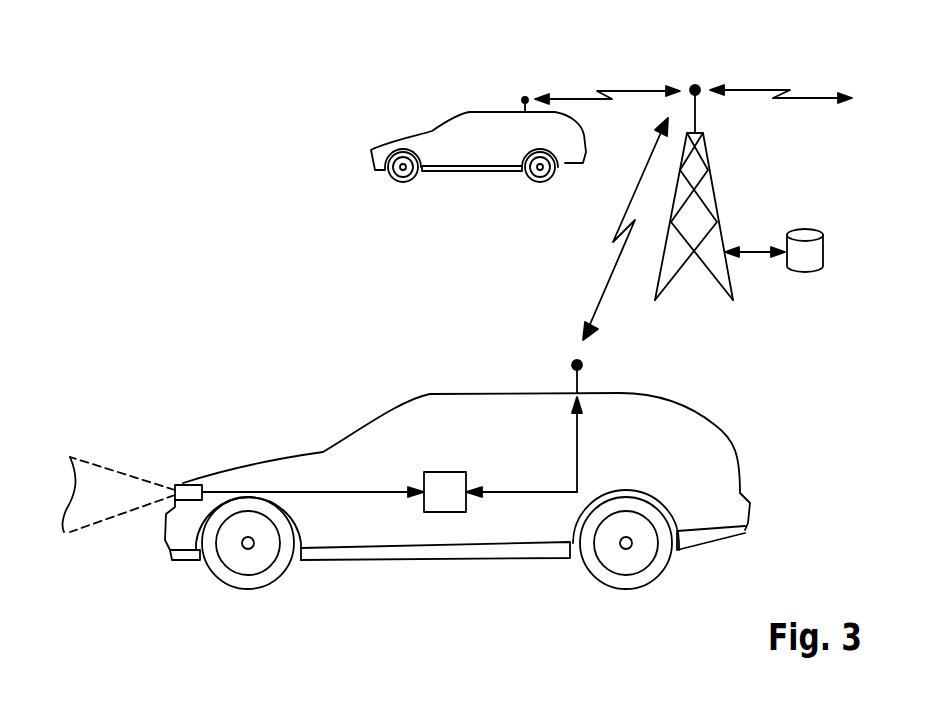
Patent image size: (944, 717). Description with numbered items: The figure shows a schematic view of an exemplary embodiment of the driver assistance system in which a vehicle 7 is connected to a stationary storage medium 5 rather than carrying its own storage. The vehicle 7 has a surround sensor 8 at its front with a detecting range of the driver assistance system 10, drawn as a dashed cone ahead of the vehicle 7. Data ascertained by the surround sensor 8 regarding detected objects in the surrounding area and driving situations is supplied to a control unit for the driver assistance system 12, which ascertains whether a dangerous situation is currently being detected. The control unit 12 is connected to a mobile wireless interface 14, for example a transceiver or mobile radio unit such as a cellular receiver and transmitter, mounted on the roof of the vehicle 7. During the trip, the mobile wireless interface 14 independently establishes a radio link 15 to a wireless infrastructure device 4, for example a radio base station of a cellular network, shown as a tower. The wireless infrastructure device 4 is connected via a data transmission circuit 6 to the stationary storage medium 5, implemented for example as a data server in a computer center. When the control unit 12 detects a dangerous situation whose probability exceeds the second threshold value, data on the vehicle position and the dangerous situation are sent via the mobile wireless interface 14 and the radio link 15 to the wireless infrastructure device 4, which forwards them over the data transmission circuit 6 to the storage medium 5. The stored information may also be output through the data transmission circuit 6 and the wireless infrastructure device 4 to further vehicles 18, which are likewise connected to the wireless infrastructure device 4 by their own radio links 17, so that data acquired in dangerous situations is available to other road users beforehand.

The wireless infrastructure device 4 is at (697, 108).
The stationary storage medium 5 is at (805, 234).
The data transmission circuit 6 is at (752, 250).
The vehicle 7 is at (443, 562).
The surround sensor 8 is at (184, 485).
The detecting range of driver assistance system 10 is at (112, 465).
The control unit for driver assistance system 12 is at (445, 472).
The mobile wireless interface 14 is at (580, 380).
The radio link 15 is at (608, 278).
The radio links 17 is at (634, 88).
The further vehicles 18 is at (477, 110).